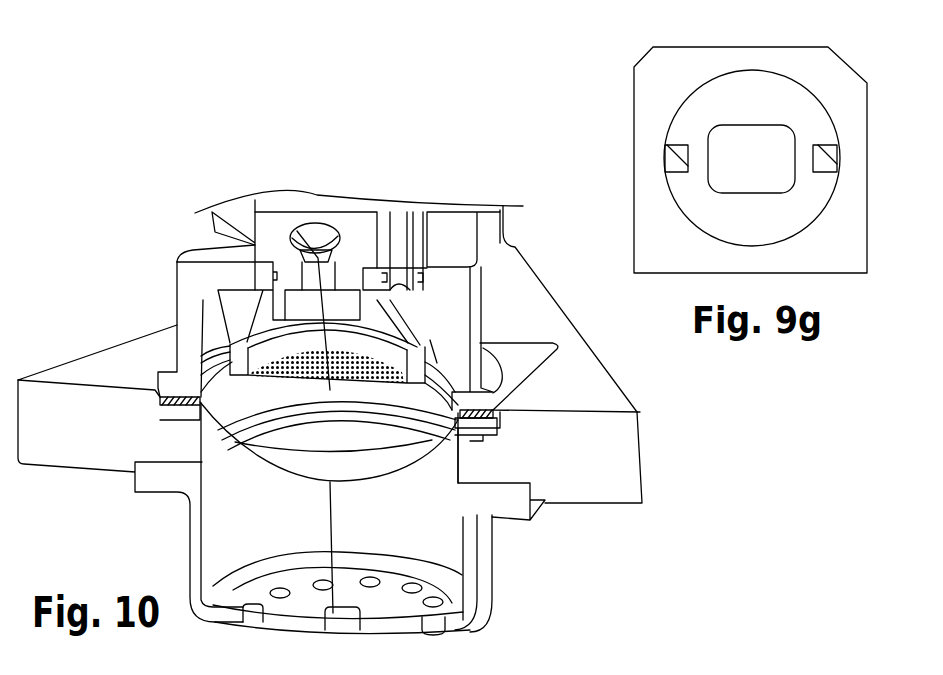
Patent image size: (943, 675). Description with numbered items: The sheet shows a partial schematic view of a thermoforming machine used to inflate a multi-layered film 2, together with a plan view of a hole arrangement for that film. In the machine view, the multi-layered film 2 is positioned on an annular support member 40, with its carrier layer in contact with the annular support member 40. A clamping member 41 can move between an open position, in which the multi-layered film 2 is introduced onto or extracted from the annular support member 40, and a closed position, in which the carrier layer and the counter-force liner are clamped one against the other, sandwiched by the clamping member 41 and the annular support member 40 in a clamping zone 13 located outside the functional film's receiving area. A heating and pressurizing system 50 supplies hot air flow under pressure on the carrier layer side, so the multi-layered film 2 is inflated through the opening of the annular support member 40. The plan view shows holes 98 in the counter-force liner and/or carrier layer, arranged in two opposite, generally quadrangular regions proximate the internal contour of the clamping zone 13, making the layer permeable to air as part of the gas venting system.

In FIG. 10, the multi-layered film 2 is at (252, 473).
In FIG. 9G, the multi-layered film 2 is at (619, 92).
In FIG. 9G, the clamping zone 13 is at (829, 93).
In FIG. 9G, the holes 98 is at (651, 160).
In FIG. 10, the annular support member 40 is at (153, 421).
In FIG. 10, the clamping member 41 is at (498, 359).
In FIG. 10, the heating and pressurizing system 50 is at (237, 325).